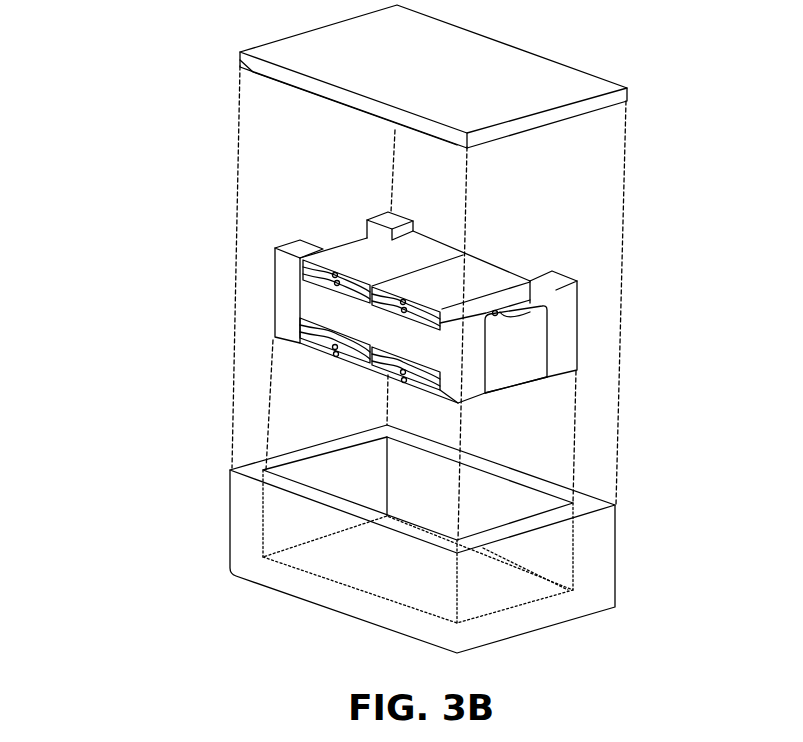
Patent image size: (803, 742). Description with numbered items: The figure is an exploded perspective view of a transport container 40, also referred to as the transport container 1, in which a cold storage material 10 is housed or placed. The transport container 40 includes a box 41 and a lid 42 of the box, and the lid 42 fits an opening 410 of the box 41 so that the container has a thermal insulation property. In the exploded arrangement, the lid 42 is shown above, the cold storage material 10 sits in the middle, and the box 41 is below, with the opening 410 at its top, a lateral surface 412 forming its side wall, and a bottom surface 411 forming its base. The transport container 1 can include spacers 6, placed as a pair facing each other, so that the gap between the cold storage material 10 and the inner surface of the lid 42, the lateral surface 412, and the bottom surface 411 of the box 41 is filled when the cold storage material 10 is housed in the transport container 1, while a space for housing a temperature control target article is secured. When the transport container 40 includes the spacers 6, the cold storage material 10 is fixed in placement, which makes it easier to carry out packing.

The transport container 1 is at (163, 202).
The spacers 6 is at (380, 213).
The cold storage material 10 is at (413, 246).
The transport container 40 is at (715, 72).
The box 41 is at (575, 611).
The lid 42 is at (590, 86).
The opening 410 is at (545, 512).
The bottom surface 411 is at (355, 580).
The lateral surface 412 is at (330, 477).